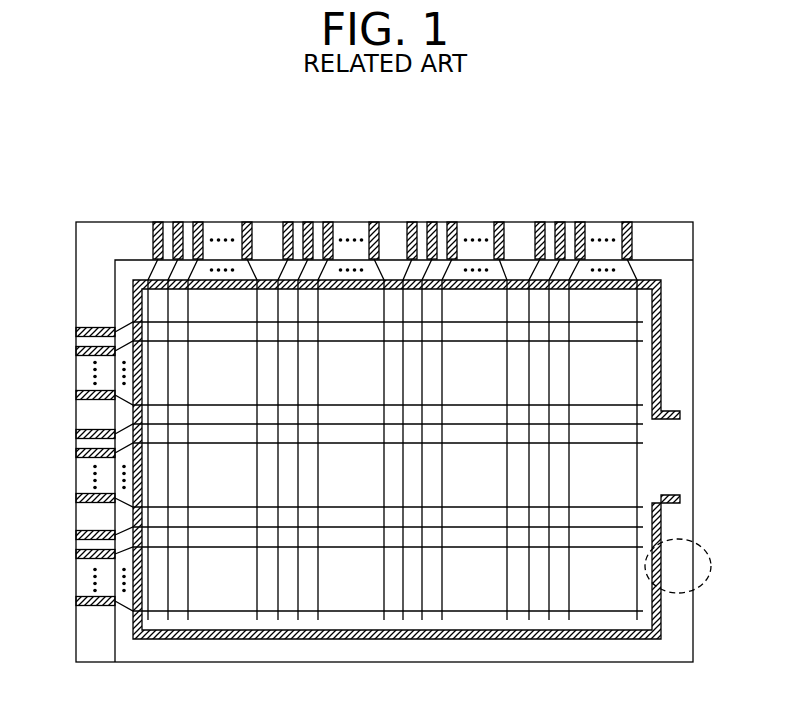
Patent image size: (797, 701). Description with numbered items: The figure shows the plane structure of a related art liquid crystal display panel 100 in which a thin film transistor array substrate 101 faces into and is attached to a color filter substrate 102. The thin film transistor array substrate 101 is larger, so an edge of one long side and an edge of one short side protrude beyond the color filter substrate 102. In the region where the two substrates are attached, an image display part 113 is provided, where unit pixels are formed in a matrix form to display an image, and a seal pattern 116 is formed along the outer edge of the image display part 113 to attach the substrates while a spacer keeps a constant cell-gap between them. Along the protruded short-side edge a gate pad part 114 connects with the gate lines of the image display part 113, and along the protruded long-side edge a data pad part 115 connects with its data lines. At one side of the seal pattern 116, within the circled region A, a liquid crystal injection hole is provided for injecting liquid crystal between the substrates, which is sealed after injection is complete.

The liquid crystal display panel 100 is at (98, 208).
The thin film transistor array substrate 101 is at (683, 241).
The color filter substrate 102 is at (683, 292).
The image display part 113 is at (368, 382).
The gate pad part 114 is at (70, 607).
The data pad part 115 is at (634, 210).
The seal pattern 116 is at (655, 350).
The enlarged region A is at (683, 537).